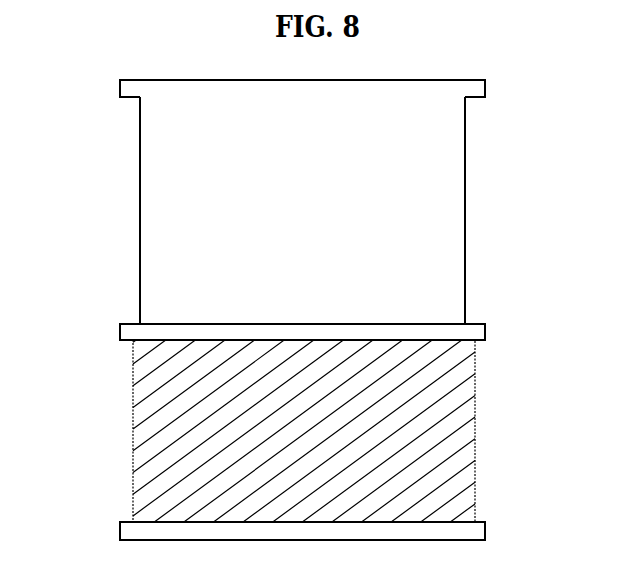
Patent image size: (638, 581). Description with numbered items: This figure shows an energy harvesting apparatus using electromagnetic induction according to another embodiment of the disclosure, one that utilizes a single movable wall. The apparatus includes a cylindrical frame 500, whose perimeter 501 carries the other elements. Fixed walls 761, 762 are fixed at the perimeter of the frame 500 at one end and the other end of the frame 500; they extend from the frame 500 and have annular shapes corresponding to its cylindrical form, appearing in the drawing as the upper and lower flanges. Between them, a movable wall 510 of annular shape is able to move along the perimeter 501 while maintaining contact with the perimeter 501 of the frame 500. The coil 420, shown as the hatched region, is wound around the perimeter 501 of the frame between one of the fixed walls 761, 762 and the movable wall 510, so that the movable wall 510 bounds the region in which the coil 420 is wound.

The fixed wall 761 is at (487, 85).
The frame 500 is at (466, 211).
The perimeter of the frame 501 is at (163, 217).
The movable wall 510 is at (486, 330).
The coil 420 is at (476, 428).
The fixed wall 762 is at (486, 526).